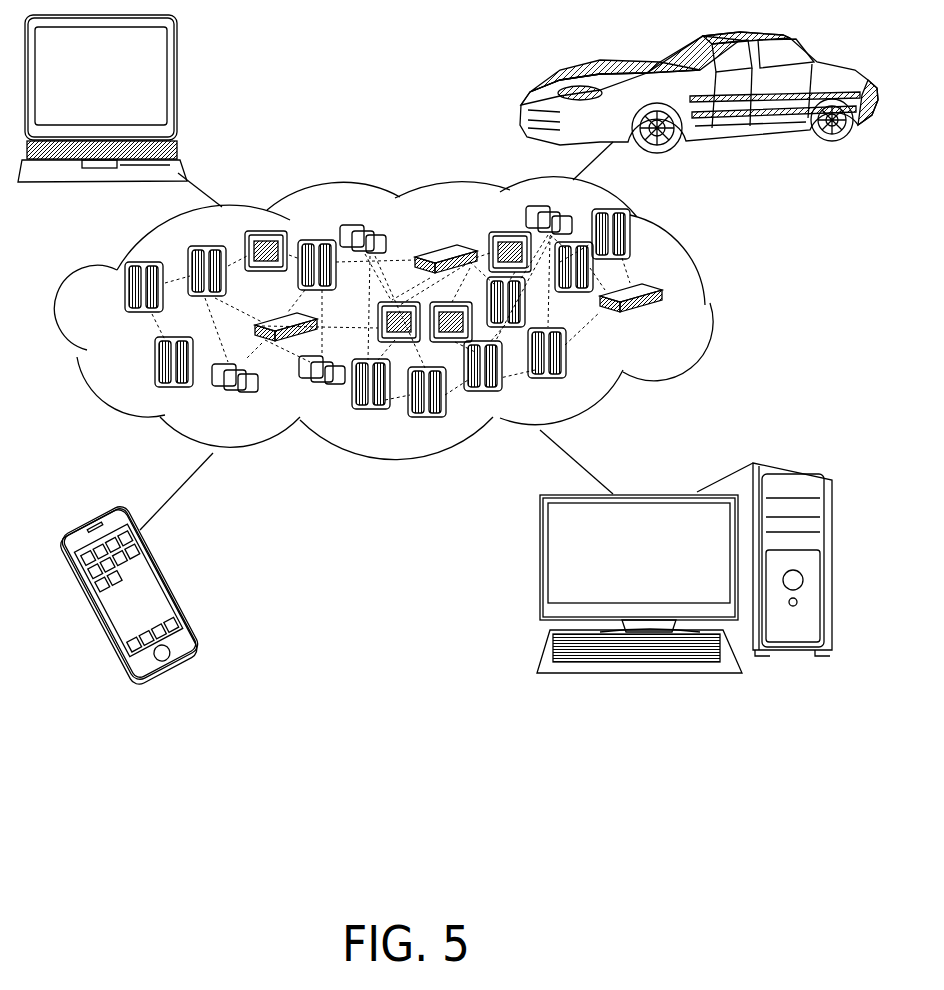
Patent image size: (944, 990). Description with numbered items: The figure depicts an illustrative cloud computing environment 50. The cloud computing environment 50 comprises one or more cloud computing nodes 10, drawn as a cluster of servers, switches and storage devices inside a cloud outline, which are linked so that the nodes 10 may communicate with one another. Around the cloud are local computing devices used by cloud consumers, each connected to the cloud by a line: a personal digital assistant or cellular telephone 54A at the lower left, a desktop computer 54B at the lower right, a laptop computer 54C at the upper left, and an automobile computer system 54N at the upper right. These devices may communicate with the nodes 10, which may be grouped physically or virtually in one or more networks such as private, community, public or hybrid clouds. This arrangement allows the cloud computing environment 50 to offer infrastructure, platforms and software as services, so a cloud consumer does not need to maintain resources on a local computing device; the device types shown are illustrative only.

The cloud computing nodes 10 is at (664, 313).
The cloud computing environment 50 is at (710, 303).
The personal digital assistant or cellular telephone 54A is at (157, 584).
The desktop computer 54B is at (727, 478).
The laptop computer 54C is at (156, 92).
The automobile computer system 54N is at (530, 99).